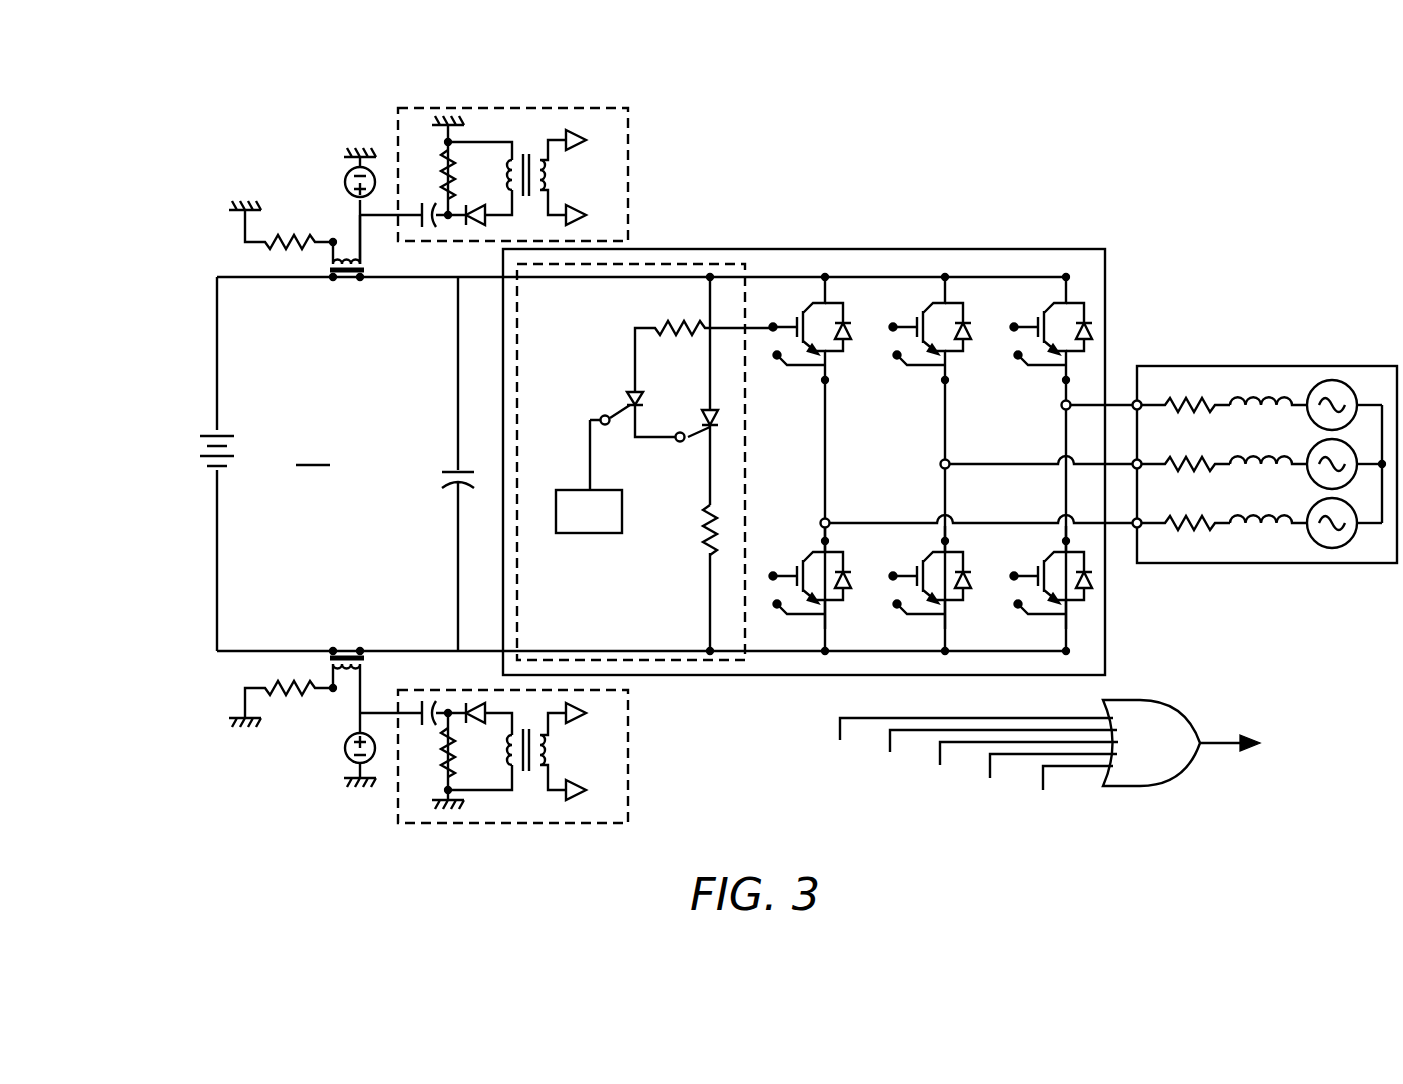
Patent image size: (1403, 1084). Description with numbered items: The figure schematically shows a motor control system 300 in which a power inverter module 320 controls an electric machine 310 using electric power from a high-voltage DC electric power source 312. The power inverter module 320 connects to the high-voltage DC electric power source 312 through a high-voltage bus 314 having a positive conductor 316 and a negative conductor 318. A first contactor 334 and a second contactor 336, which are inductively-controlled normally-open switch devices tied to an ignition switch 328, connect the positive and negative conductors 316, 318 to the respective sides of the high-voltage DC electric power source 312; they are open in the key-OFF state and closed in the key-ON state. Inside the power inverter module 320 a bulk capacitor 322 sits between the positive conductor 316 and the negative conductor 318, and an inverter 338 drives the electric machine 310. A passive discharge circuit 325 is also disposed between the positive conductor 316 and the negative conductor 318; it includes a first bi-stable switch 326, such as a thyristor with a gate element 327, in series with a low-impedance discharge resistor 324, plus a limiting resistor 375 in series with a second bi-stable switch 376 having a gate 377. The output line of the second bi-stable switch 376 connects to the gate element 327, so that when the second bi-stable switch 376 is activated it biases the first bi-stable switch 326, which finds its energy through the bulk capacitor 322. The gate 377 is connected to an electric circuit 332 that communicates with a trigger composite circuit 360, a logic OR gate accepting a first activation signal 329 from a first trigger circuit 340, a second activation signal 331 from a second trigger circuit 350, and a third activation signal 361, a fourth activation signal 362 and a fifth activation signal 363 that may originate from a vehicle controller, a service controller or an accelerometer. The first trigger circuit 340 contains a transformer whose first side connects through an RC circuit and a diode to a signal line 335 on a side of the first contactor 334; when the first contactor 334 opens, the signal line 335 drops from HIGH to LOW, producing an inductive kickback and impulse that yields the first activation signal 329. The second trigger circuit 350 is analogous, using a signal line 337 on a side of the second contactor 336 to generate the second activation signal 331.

The motor control system 300 is at (195, 150).
The electric machine 310 is at (1268, 366).
The high-voltage DC electric power source 312 is at (206, 450).
The high-voltage bus 314 is at (205, 280).
The positive conductor 316 is at (232, 277).
The negative conductor 318 is at (236, 656).
The power inverter module 320 is at (1022, 235).
The bulk capacitor 322 is at (442, 478).
The low-impedance discharge resistor 324 is at (700, 520).
The passive discharge circuit 325 is at (758, 282).
The first bi-stable switch 326 is at (718, 415).
The gate element 327 is at (712, 465).
The ignition switch 328 is at (346, 186).
The first activation signal 329 is at (575, 172).
The second activation signal 331 is at (572, 752).
The electric circuit 332 is at (582, 490).
The first contactor 334 is at (348, 300).
The signal line 335 is at (380, 212).
The second contactor 336 is at (348, 628).
The signal line 337 is at (380, 716).
The inverter 338 is at (938, 262).
The first trigger circuit 340 is at (555, 147).
The second trigger circuit 350 is at (555, 783).
The trigger composite circuit 360 is at (1170, 757).
The third activation signal 361 is at (964, 801).
The fourth activation signal 362 is at (914, 788).
The fifth activation signal 363 is at (864, 776).
The limiting resistor 375 is at (658, 325).
The second bi-stable switch 376 is at (630, 392).
The gate 377 is at (625, 410).